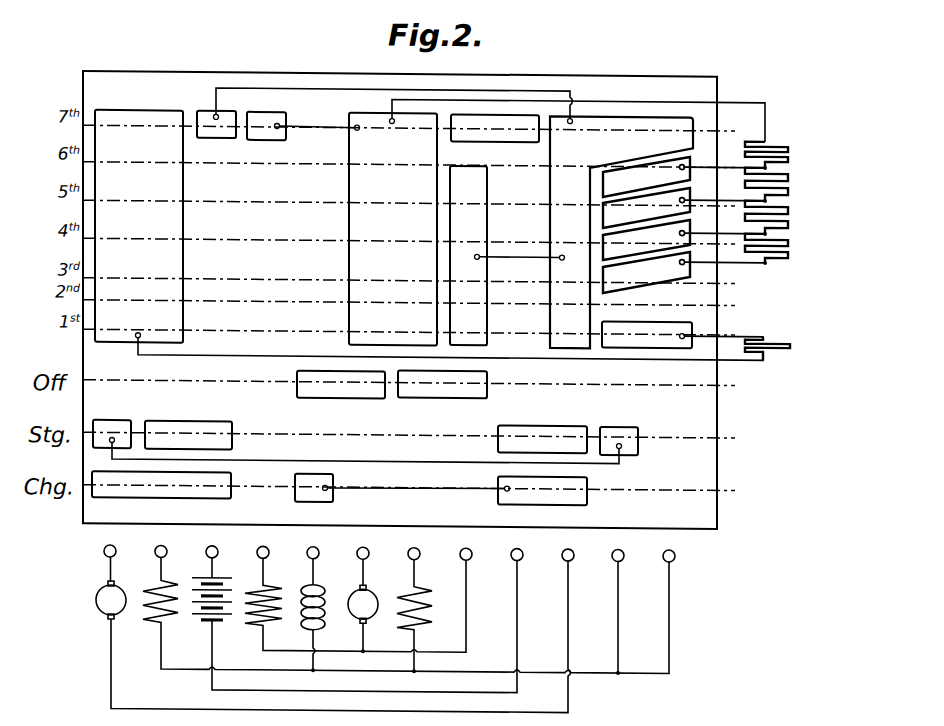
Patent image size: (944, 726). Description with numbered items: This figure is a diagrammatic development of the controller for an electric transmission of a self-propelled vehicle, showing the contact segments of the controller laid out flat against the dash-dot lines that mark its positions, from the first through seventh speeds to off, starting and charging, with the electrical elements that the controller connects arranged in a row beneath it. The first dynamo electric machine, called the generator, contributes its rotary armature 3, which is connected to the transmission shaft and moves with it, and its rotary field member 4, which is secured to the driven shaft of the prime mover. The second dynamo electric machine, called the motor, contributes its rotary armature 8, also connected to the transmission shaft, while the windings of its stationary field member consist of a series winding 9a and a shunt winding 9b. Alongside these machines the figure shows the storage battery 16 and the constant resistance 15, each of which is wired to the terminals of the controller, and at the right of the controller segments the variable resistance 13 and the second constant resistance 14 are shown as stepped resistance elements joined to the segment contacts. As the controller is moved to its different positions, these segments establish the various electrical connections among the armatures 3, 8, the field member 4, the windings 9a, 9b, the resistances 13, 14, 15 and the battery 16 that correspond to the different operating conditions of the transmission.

The rotary armature 3 is at (329, 635).
The rotary field member 4 is at (402, 615).
The storage battery 16 is at (348, 625).
The shunt winding 9b is at (350, 605).
The constant resistance 15 is at (305, 616).
The rotary armature 8 is at (361, 606).
The series winding 9a is at (409, 616).
The variable resistance 13 is at (787, 204).
The constant resistance 14 is at (786, 353).